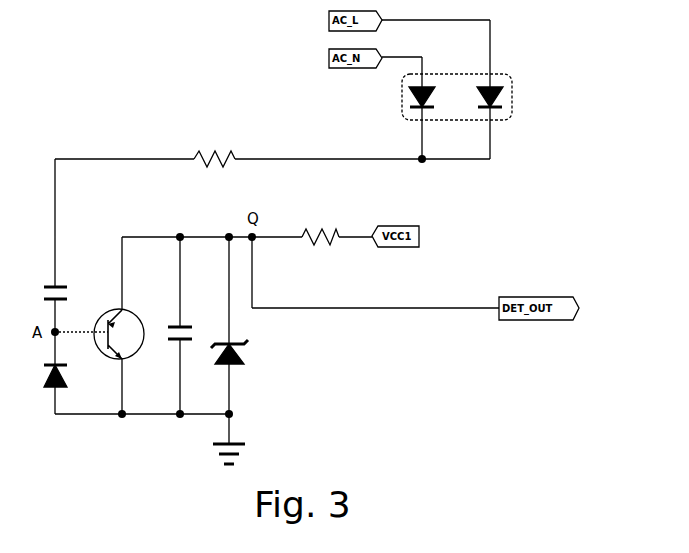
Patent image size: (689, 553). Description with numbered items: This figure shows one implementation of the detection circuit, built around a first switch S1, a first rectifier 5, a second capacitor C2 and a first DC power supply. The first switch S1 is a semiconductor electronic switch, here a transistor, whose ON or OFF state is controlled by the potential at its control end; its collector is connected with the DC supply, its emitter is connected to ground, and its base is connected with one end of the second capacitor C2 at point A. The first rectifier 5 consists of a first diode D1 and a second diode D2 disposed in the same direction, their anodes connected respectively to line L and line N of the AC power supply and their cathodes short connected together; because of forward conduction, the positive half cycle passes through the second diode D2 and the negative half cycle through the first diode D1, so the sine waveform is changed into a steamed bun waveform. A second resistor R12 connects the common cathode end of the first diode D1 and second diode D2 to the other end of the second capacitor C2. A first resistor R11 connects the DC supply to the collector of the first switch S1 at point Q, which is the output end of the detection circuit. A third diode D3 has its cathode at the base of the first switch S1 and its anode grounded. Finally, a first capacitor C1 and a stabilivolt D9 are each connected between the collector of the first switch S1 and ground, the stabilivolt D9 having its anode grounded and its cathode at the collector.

The first rectifier 5 is at (478, 122).
The second resistor R12 is at (210, 152).
The first resistor R11 is at (322, 228).
The first capacitor C1 is at (170, 320).
The second capacitor C2 is at (50, 283).
The first switch S1 is at (107, 310).
The first diode D1 is at (400, 93).
The second diode D2 is at (510, 93).
The third diode D3 is at (48, 385).
The stabilivolt D9 is at (245, 355).